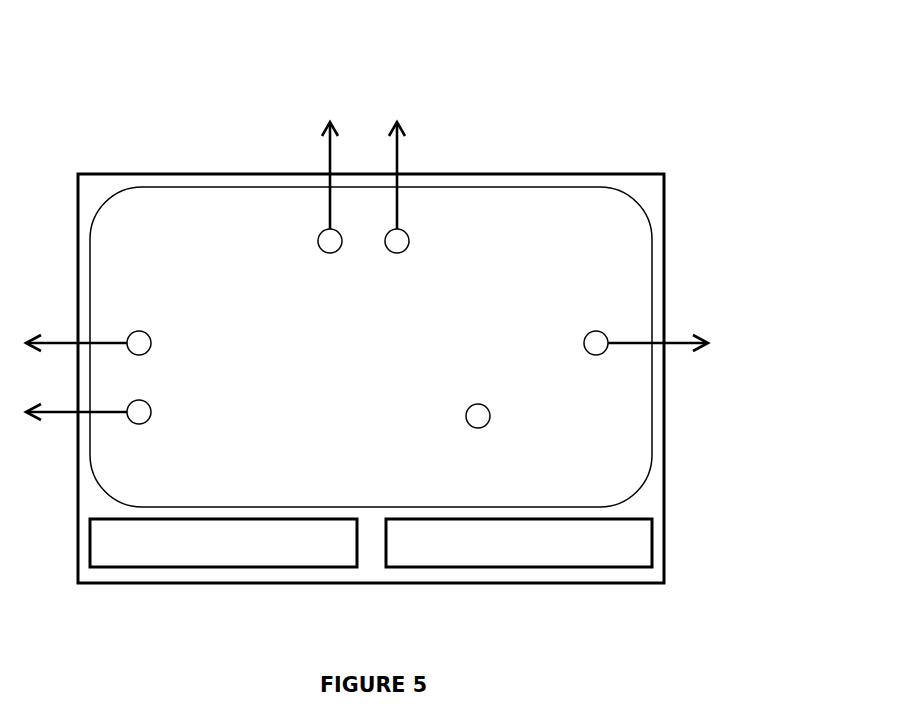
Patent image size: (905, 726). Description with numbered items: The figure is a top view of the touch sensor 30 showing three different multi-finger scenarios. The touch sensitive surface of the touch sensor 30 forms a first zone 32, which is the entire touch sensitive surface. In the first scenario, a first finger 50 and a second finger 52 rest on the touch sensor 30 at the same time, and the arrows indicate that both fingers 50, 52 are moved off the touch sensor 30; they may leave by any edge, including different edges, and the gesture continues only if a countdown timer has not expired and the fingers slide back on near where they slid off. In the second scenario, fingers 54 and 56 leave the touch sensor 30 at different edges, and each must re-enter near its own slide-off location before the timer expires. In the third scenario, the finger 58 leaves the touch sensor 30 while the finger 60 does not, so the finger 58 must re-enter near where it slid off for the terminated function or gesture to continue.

The touch sensor 30 is at (150, 146).
The first zone 32 is at (612, 478).
The first finger 50 is at (325, 204).
The second finger 52 is at (395, 205).
The finger 54 is at (114, 346).
The finger 56 is at (622, 343).
The finger 58 is at (114, 415).
The finger 60 is at (497, 414).